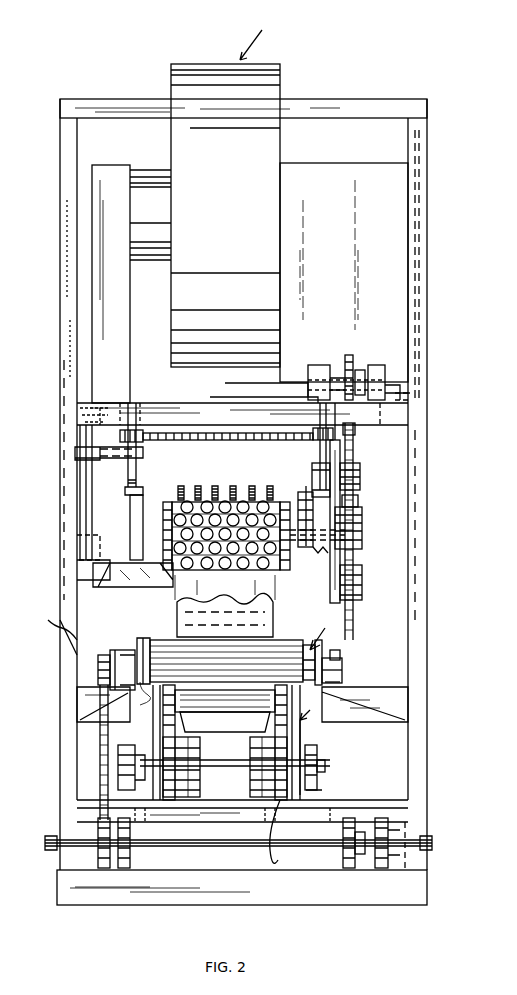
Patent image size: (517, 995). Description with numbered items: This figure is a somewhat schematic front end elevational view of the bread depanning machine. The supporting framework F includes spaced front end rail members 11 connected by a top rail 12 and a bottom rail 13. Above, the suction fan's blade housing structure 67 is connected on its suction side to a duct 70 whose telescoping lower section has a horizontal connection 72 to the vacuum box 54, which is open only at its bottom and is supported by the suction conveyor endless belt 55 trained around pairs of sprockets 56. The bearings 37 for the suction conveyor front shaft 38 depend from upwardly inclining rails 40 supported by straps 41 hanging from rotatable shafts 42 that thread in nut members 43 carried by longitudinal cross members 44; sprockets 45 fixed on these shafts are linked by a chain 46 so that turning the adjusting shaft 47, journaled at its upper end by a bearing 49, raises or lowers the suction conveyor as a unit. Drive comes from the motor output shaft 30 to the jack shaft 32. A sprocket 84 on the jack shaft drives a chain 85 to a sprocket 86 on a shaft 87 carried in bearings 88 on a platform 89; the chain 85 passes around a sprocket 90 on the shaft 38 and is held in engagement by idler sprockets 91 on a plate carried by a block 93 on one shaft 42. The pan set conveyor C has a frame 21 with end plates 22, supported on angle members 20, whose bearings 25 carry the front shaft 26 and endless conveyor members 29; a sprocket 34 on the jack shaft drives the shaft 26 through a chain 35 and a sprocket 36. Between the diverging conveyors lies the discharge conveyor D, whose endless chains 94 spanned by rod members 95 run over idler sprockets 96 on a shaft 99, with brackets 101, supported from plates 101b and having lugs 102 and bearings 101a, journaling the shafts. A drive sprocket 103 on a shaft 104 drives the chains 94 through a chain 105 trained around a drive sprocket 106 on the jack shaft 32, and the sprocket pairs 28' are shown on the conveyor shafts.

The supporting framework F is at (253, 37).
The front end rail members 11 is at (430, 134).
The top rail 12 is at (340, 105).
The bottom rail 13 is at (340, 893).
The fan blade housing structure 67 is at (280, 80).
The duct 70 is at (112, 170).
The bearings 88 is at (318, 365).
The sprocket 86 is at (350, 355).
The shaft 87 is at (360, 370).
The platform 89 is at (400, 388).
The nut members 43 is at (140, 405).
The longitudinal cross members 44 is at (408, 425).
The bearing 49 is at (100, 405).
The sprockets 45 is at (143, 440).
The chain 46 is at (250, 455).
The adjusting shaft 47 is at (92, 500).
The rotatable shafts 42 is at (128, 474).
The rails 40 is at (142, 500).
The bearings 37 is at (330, 575).
The block 93 is at (355, 430).
The vacuum box 54 is at (232, 593).
The endless belt 55 is at (215, 490).
The sprockets 56 is at (298, 492).
The idler sprockets 91 is at (356, 470).
The straps 41 is at (380, 470).
The sprocket 90 is at (358, 500).
The front shaft 38 is at (362, 528).
The chain 85 is at (362, 590).
The discharge conveyor D is at (317, 624).
The horizontal connection 72 is at (130, 585).
The endless chains 94 is at (145, 640).
The shaft 104 is at (118, 650).
The drive sprocket 103 is at (47, 632).
The rod members 95 is at (312, 645).
The lugs 102 is at (322, 660).
The brackets 101 is at (342, 668).
The shaft 99 is at (342, 658).
The bearings 101a is at (342, 678).
The plates 101b is at (405, 700).
The chain 105 is at (77, 725).
The end plates 22 is at (153, 730).
The idler sprockets 96 is at (138, 695).
The conveyor frame 21 is at (321, 711).
The endless conveyor members 29 is at (250, 790).
The bearings 25 is at (312, 745).
The front shaft 26 is at (320, 760).
The angle members 20 is at (310, 795).
The sprocket 36 is at (100, 760).
The chain 35 is at (118, 790).
The rails 28' is at (242, 820).
The jack shaft 32 is at (252, 835).
The sprocket 34 is at (130, 860).
The pan set conveyor C is at (281, 835).
The output shaft 30 is at (388, 822).
The sprocket 84 is at (360, 832).
The drive sprocket 106 is at (45, 862).